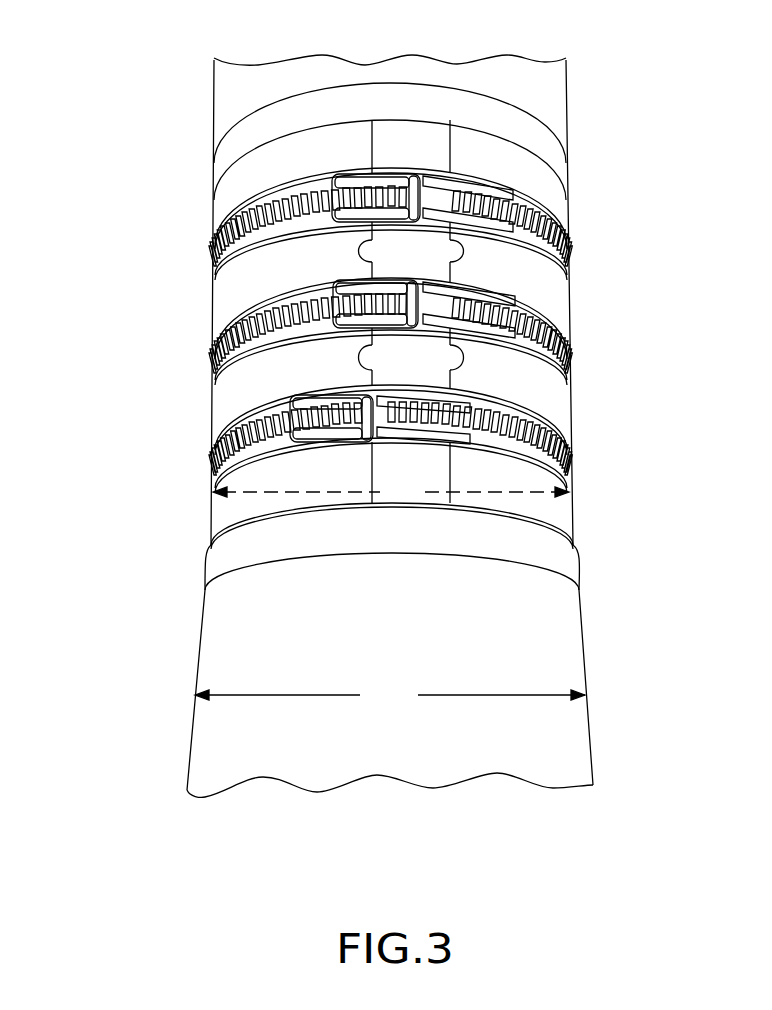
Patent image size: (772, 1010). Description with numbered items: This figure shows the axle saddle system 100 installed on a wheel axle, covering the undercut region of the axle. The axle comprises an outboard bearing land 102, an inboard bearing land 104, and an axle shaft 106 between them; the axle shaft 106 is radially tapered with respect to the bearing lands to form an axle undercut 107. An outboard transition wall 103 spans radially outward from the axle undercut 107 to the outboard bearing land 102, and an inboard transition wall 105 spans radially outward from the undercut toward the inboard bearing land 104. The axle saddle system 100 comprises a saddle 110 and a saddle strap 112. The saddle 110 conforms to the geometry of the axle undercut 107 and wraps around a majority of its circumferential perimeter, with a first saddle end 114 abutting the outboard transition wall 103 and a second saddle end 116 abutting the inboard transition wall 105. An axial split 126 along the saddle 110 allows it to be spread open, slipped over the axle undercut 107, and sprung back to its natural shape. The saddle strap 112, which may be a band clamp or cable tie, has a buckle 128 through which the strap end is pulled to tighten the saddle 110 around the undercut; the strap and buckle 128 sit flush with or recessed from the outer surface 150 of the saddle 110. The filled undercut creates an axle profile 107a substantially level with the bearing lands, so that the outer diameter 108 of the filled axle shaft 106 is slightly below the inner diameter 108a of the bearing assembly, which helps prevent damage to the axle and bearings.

The axle saddle system 100 is at (598, 298).
The outboard bearing land 102 is at (553, 80).
The outboard transition wall 103 is at (555, 165).
The inboard bearing land 104 is at (582, 617).
The inboard transition wall 105 is at (560, 556).
The axle shaft 106 is at (143, 470).
The axle undercut 107 is at (403, 467).
The axle profile 107a is at (595, 375).
The outer diameter 108 is at (391, 488).
The inner diameter 108a is at (390, 692).
The saddle 110 is at (220, 297).
The saddle strap 112 is at (215, 243).
The first saddle end 114 is at (557, 183).
The second saddle end 116 is at (573, 541).
The axial split 126 is at (215, 270).
The buckle 128 is at (390, 174).
The outer surface 150 is at (213, 523).